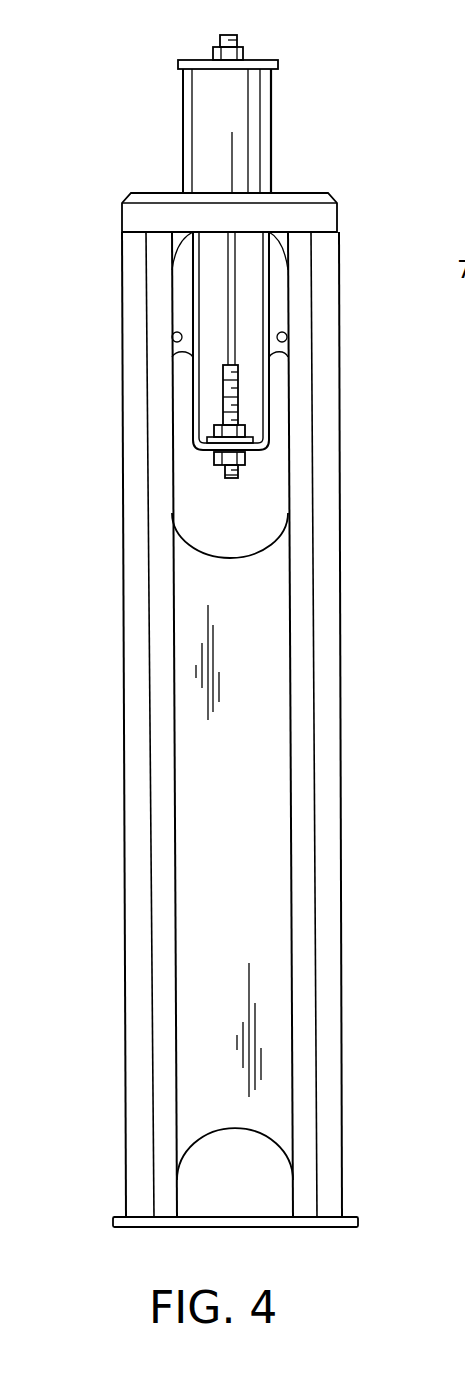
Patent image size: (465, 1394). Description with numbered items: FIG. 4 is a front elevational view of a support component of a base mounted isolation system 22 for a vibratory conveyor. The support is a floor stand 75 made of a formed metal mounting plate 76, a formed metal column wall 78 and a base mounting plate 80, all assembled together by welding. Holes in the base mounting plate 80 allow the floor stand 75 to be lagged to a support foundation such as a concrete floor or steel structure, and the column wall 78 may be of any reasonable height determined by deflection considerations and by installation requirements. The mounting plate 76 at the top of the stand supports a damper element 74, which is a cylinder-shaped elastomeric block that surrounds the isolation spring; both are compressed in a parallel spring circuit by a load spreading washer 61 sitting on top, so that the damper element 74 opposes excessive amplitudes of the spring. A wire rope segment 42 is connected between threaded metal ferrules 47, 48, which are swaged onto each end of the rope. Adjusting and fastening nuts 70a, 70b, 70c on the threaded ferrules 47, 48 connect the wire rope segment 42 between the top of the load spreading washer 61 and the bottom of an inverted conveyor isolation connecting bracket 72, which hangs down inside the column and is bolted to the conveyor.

The base mounted isolation system 22 is at (88, 540).
The wire rope segment 42 is at (235, 302).
The threaded metal ferrule 47 is at (220, 35).
The threaded metal ferrule 48 is at (238, 400).
The load spreading washer 61 is at (178, 63).
The adjusting and fastening nut 70a is at (245, 52).
The adjusting and fastening nut 70b is at (213, 433).
The adjusting and fastening nut 70c is at (213, 461).
The inverted conveyor isolation connecting bracket 72 is at (182, 303).
The damper element 74 is at (275, 132).
The floor stand 75 is at (122, 607).
The formed metal mounting plate 76 is at (338, 210).
The formed metal column wall 78 is at (339, 602).
The base mounting plate 80 is at (113, 1221).